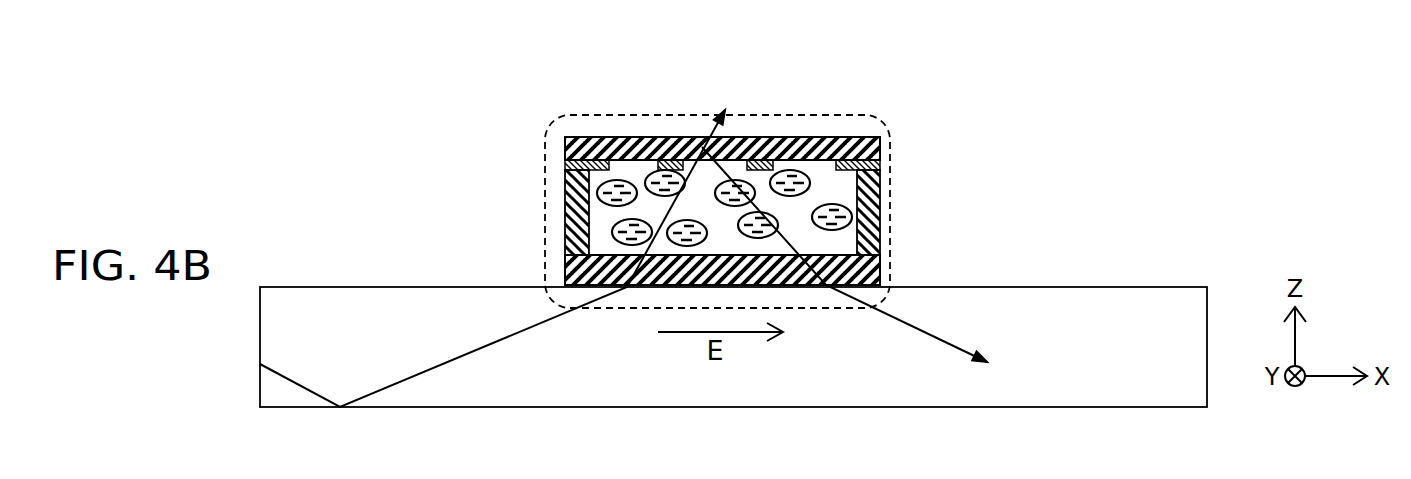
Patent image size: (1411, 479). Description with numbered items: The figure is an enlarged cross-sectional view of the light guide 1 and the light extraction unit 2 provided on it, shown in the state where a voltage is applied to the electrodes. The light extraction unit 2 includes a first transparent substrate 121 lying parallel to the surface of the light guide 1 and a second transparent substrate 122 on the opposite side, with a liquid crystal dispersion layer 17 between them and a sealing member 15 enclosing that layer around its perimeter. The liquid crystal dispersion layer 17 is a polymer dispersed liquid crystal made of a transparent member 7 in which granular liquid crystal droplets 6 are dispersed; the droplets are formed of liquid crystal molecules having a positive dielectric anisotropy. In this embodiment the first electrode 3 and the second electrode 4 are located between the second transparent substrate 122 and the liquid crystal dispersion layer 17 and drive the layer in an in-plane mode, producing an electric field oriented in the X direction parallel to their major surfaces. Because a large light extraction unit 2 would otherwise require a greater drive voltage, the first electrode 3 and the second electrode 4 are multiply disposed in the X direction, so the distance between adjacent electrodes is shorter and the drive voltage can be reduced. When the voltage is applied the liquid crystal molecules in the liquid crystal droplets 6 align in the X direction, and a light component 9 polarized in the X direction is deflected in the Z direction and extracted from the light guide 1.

The light guide 1 is at (1122, 307).
The light extraction unit 2 is at (562, 118).
The first electrode 3 is at (565, 167).
The second electrode 4 is at (673, 160).
The liquid crystal droplets 6 is at (782, 168).
The transparent member 7 is at (832, 177).
The component 9 is at (468, 350).
The sealing member 15 is at (880, 213).
The liquid crystal dispersion layer 17 is at (778, 48).
The first transparent substrate 121 is at (883, 272).
The second transparent substrate 122 is at (882, 137).